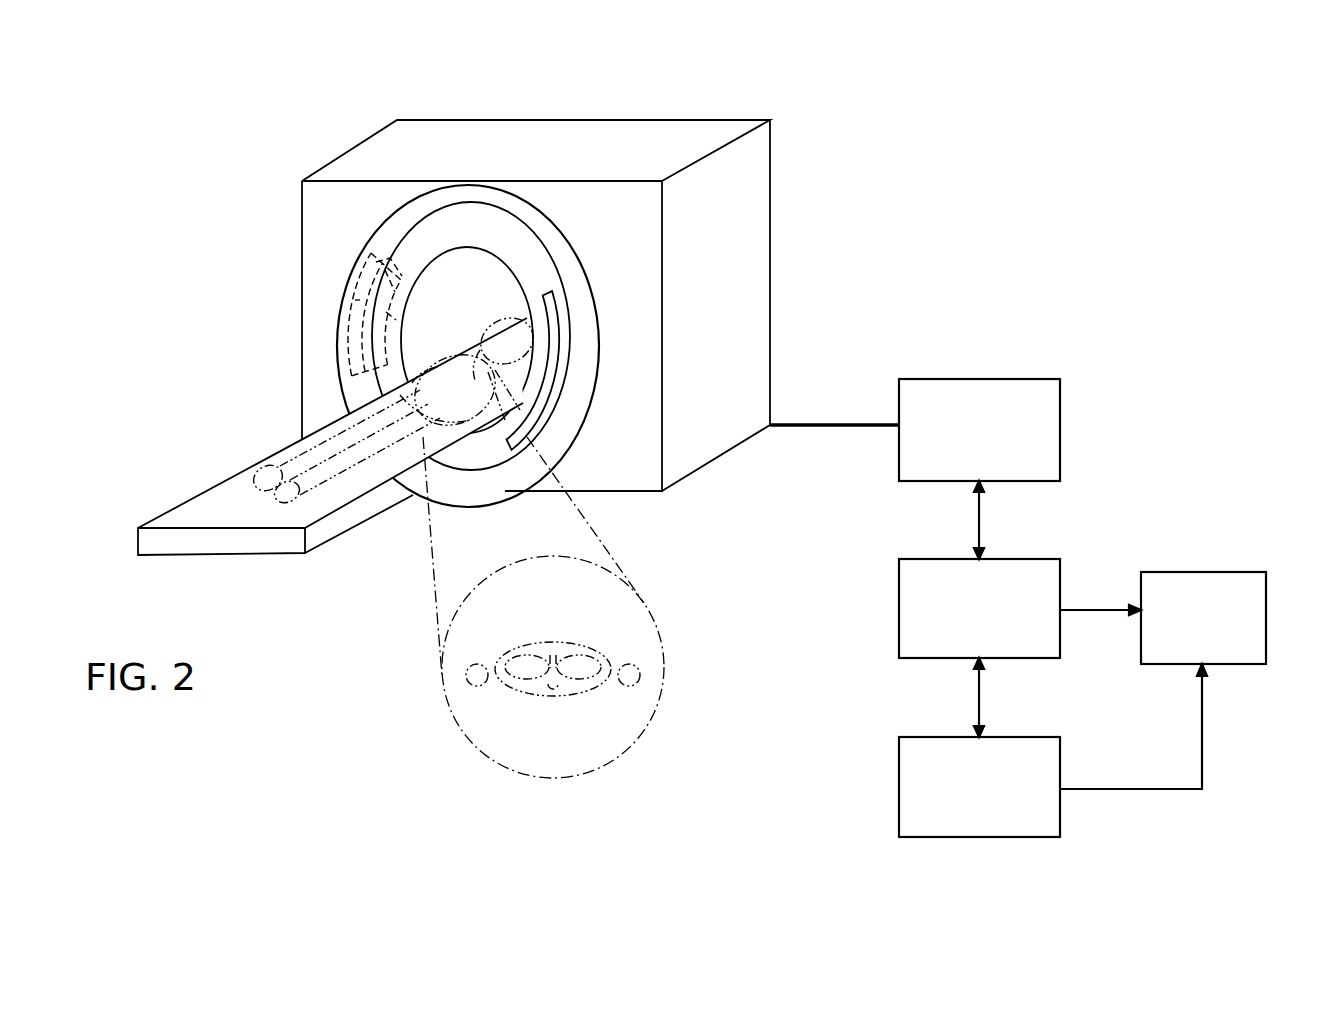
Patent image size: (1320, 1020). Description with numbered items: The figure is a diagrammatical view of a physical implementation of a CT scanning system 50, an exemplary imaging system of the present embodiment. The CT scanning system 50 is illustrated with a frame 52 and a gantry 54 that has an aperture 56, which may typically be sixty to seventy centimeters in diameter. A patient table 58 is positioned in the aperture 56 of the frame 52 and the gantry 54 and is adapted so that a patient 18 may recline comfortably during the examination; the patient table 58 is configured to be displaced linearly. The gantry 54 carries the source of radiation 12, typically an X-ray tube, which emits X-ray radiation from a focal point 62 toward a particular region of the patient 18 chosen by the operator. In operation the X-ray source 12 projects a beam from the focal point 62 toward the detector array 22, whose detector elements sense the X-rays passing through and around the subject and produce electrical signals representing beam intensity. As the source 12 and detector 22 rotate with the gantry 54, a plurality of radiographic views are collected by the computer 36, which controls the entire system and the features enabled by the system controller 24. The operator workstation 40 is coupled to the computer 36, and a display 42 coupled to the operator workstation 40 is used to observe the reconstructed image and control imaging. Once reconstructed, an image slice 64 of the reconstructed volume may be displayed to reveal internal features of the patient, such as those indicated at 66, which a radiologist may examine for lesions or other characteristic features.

The source of radiation 12 is at (343, 311).
The patient 18 is at (287, 440).
The detector array 22 is at (550, 372).
The system controller 24 is at (1060, 430).
The computer 36 is at (899, 605).
The operator workstation 40 is at (899, 775).
The display 42 is at (1266, 607).
The CT scanning system 50 is at (722, 86).
The frame 52 is at (757, 198).
The gantry 54 is at (450, 218).
The aperture 56 is at (468, 283).
The patient table 58 is at (272, 543).
The focal point 62 is at (355, 264).
The image slice 64 is at (652, 712).
The features 66 is at (597, 648).